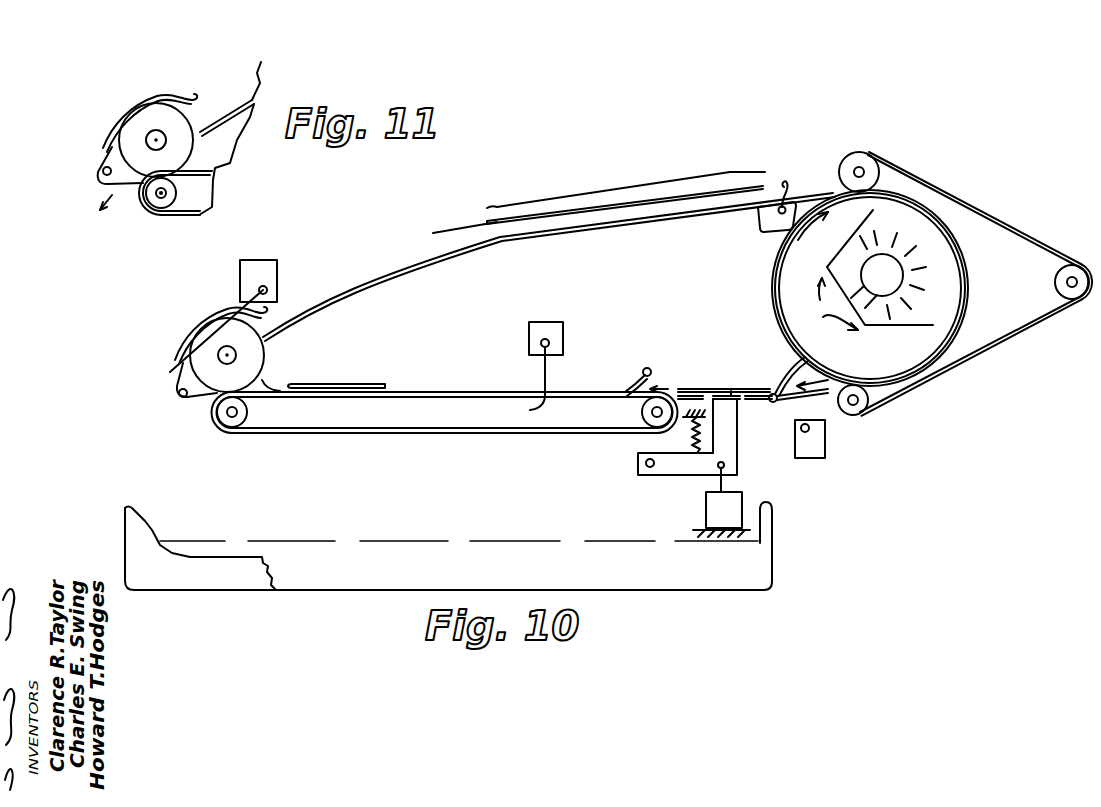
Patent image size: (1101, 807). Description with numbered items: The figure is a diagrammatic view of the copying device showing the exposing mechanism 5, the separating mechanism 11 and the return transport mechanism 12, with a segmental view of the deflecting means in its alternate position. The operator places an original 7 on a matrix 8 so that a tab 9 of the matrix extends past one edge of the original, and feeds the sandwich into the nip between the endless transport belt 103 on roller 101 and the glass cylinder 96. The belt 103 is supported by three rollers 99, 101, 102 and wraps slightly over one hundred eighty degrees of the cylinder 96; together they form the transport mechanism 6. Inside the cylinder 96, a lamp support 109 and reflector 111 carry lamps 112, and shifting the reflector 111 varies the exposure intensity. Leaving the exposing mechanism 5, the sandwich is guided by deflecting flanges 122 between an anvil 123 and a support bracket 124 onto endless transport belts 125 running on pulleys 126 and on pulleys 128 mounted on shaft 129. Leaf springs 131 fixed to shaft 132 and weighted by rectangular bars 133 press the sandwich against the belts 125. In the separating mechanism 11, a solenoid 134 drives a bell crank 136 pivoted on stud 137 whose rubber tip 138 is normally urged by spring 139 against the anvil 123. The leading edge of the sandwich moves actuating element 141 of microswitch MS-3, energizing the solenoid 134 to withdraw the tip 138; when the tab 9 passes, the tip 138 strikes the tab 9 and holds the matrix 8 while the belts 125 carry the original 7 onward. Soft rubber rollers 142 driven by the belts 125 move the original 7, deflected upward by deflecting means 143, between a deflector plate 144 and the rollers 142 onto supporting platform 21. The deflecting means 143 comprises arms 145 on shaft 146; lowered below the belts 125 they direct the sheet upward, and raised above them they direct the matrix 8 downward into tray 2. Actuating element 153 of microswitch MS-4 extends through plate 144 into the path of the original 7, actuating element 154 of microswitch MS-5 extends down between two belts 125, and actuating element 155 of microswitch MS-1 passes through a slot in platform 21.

In FIG. 10, the removable tray 2 is at (246, 577).
In FIG. 10, the exposing mechanism 5 is at (797, 297).
In FIG. 10, the transport mechanism 6 is at (970, 198).
In FIG. 10, the original 7 is at (553, 202).
In FIG. 10, the matrix 8 is at (494, 218).
In FIG. 10, the tab 9 is at (449, 230).
In FIG. 10, the separating mechanism 11 is at (746, 466).
In FIG. 10, the transport mechanism 12 is at (292, 436).
In FIG. 10, the supporting platform 21 is at (563, 237).
In FIG. 10, the glass cylinder 96 is at (945, 360).
In FIG. 10, the roller 99 is at (1072, 300).
In FIG. 10, the roller 101 is at (858, 162).
In FIG. 10, the roller 102 is at (864, 412).
In FIG. 10, the endless transport belt 103 is at (1018, 228).
In FIG. 10, the lamp support 109 is at (823, 317).
In FIG. 10, the reflector 111 is at (858, 226).
In FIG. 10, the lamps 112 is at (900, 268).
In FIG. 10, the deflecting flanges 122 is at (793, 375).
In FIG. 10, the anvil 123 is at (707, 388).
In FIG. 10, the support bracket 124 is at (690, 393).
In FIG. 10, the endless transport belts 125 is at (396, 435).
In FIG. 10, the pulleys 126 is at (652, 425).
In FIG. 11, the pulleys 128 is at (152, 204).
In FIG. 10, the pulleys 128 is at (227, 432).
In FIG. 11, the shaft 129 is at (166, 193).
In FIG. 10, the shaft 129 is at (240, 412).
In FIG. 10, the leaf springs 131 is at (448, 391).
In FIG. 10, the fixed shaft 132 is at (645, 370).
In FIG. 10, the rectangular bar 133 is at (333, 384).
In FIG. 10, the solenoid 134 is at (728, 505).
In FIG. 10, the bell crank 136 is at (737, 455).
In FIG. 10, the stud 137 is at (650, 468).
In FIG. 10, the rubber tip 138 is at (727, 395).
In FIG. 10, the spring 139 is at (692, 428).
In FIG. 10, the actuating element 141 is at (803, 428).
In FIG. 11, the soft rubber rollers 142 is at (141, 130).
In FIG. 10, the soft rubber rollers 142 is at (210, 334).
In FIG. 10, the deflecting means 143 is at (175, 390).
In FIG. 11, the deflector plate 144 is at (156, 96).
In FIG. 10, the deflector plate 144 is at (233, 310).
In FIG. 11, the arms 145 is at (112, 147).
In FIG. 10, the arms 145 is at (183, 374).
In FIG. 11, the shaft 146 is at (104, 172).
In FIG. 10, the shaft 146 is at (180, 396).
In FIG. 10, the actuating element 153 is at (172, 370).
In FIG. 10, the actuating element 154 is at (548, 382).
In FIG. 10, the actuating element 155 is at (785, 180).
In FIG. 10, the microswitch MS-1 is at (770, 225).
In FIG. 10, the microswitch MS-3 is at (815, 452).
In FIG. 10, the microswitch MS-4 is at (266, 283).
In FIG. 10, the microswitch MS-5 is at (540, 330).